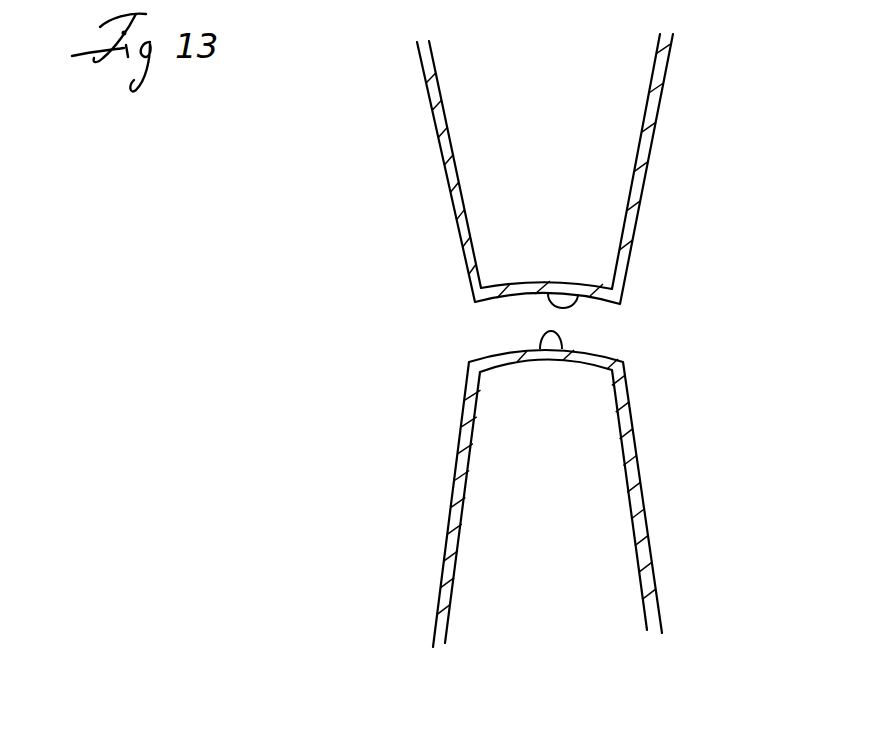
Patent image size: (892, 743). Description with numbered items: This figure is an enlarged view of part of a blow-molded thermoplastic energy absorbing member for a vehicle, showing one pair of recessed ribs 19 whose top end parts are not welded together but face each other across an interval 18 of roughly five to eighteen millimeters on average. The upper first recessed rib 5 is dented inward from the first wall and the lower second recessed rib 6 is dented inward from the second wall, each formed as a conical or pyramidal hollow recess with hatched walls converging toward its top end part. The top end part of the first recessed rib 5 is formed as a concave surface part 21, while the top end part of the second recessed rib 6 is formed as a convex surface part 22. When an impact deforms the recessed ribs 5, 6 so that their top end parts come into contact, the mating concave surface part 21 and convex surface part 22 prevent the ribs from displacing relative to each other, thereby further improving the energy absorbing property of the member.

The first recessed rib 5 is at (575, 171).
The second recessed rib 6 is at (580, 489).
The interval 18 is at (588, 475).
The pair of recessed ribs 19 is at (603, 171).
The concave surface part 21 is at (582, 290).
The convex surface part 22 is at (558, 338).